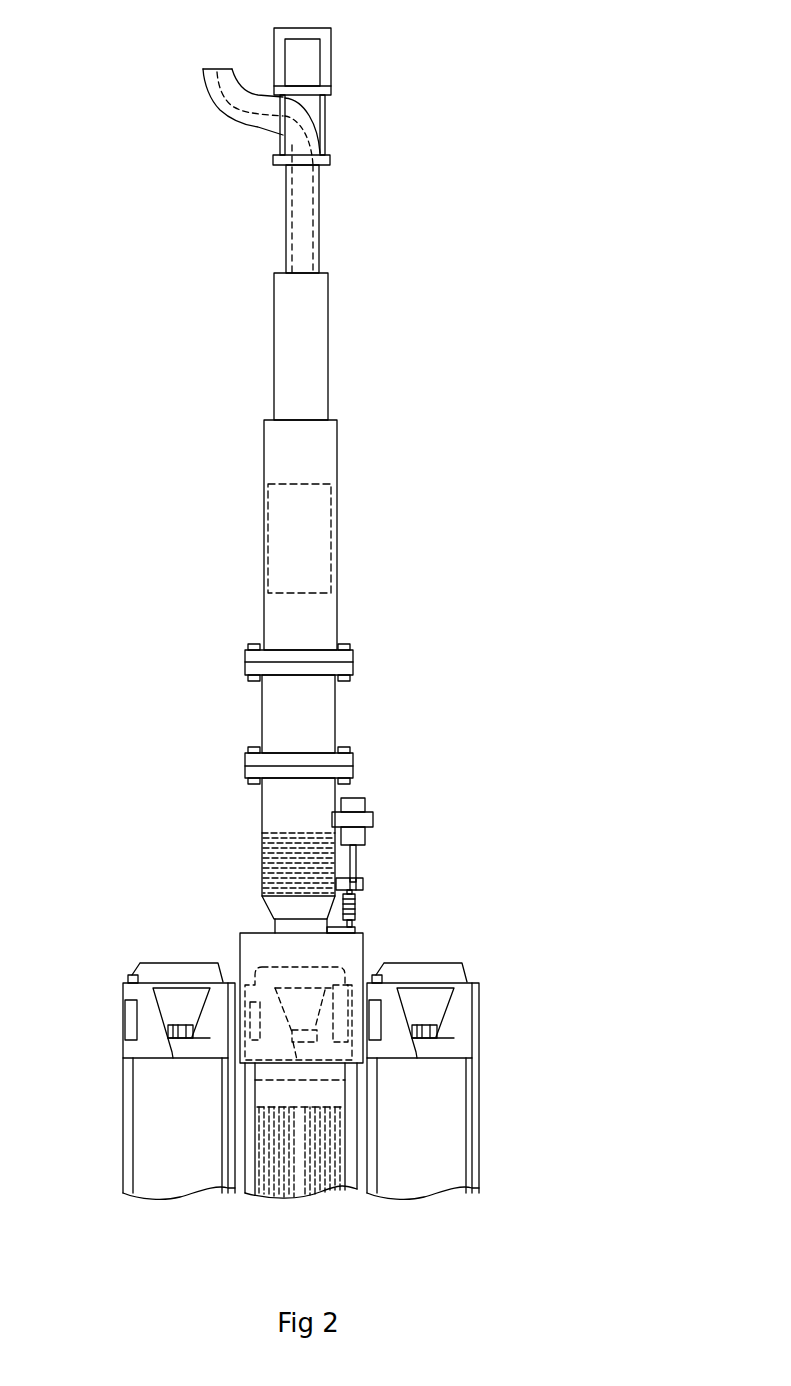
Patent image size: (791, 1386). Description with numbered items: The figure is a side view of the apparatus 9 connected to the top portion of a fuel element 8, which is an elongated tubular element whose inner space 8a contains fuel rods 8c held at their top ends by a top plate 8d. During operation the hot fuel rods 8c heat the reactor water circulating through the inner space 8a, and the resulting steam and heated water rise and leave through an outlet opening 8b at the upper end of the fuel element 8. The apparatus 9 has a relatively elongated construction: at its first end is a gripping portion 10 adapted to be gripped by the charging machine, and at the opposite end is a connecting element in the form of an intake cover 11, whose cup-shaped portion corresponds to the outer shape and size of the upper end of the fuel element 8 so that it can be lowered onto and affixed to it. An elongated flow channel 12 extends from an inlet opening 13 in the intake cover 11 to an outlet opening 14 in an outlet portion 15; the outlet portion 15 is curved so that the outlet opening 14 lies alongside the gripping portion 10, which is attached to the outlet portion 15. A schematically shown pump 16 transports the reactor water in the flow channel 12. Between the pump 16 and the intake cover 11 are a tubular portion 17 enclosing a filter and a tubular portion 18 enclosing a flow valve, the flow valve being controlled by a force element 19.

The fuel element 8 is at (167, 1103).
The inner space 8a is at (300, 1138).
The outlet opening 8b is at (313, 1050).
The fuel rods 8c is at (268, 1178).
The top plate 8d is at (283, 1092).
The apparatus 9 is at (198, 454).
The gripping portion 10 is at (325, 49).
The intake cover 11 is at (342, 948).
The flow channel 12 is at (302, 223).
The inlet opening 13 is at (286, 931).
The outlet opening 14 is at (212, 67).
The outlet portion 15 is at (222, 113).
The pump 16 is at (303, 522).
The tubular portion 17 is at (287, 718).
The tubular portion 18 is at (288, 818).
The force element 19 is at (387, 851).